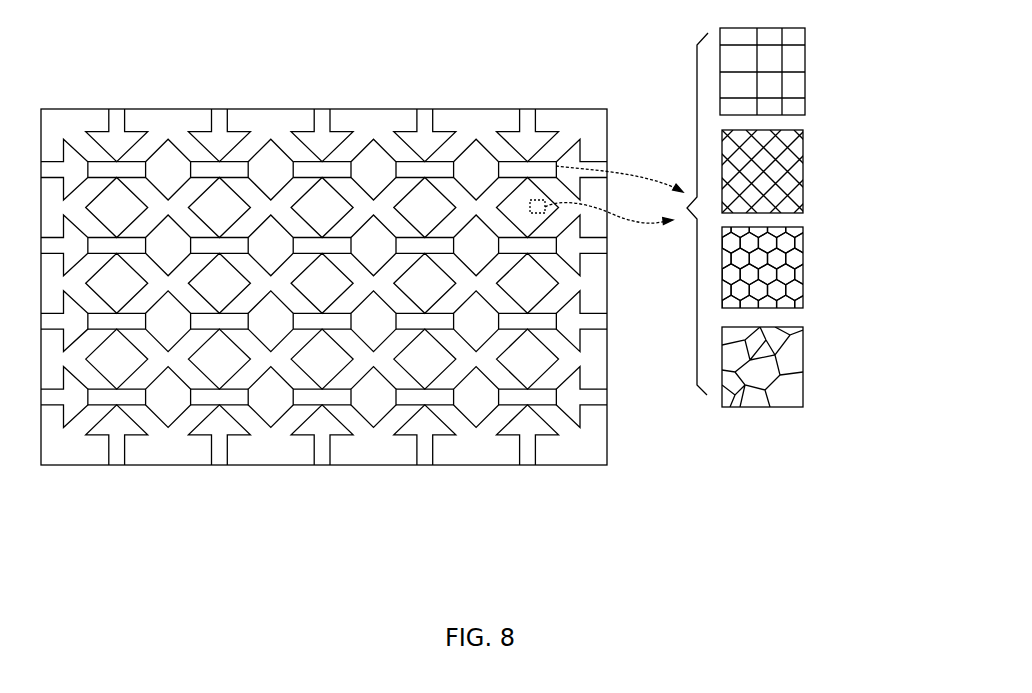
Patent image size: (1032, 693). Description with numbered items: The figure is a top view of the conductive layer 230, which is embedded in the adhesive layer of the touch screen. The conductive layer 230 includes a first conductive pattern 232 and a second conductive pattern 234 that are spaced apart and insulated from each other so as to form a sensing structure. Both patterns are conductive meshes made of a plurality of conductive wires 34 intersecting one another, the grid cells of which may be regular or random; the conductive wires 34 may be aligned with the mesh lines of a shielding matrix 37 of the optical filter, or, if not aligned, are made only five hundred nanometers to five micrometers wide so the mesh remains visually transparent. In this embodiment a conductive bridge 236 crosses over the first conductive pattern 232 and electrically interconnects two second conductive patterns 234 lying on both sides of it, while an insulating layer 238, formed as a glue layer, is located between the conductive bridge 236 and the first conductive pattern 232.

The conductive layer 230 is at (575, 170).
The first conductive pattern 232 is at (122, 147).
The second conductive pattern 234 is at (84, 410).
The conductive bridge 236 is at (531, 398).
The insulating layer 238 is at (427, 409).
The shielding matrix 37 is at (350, 357).
The conductive wires 34 is at (782, 60).